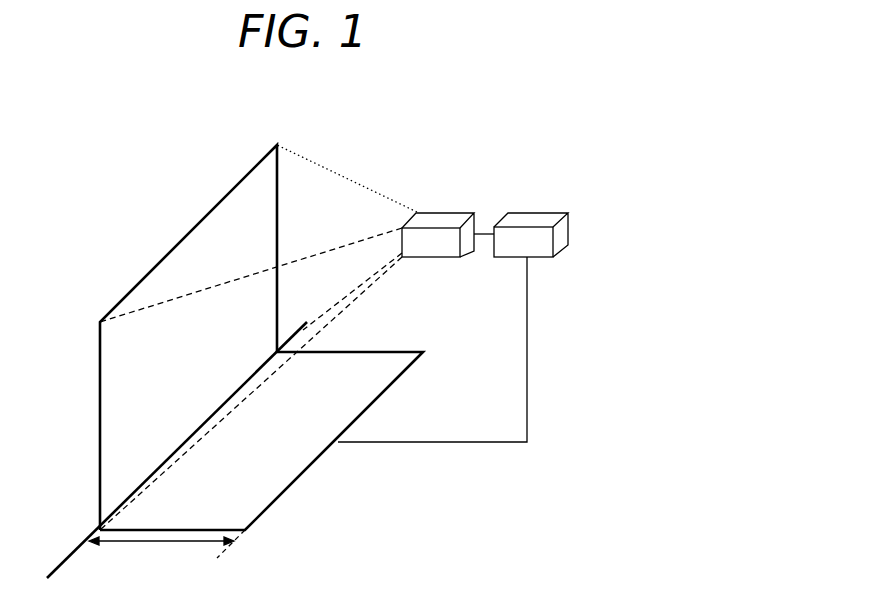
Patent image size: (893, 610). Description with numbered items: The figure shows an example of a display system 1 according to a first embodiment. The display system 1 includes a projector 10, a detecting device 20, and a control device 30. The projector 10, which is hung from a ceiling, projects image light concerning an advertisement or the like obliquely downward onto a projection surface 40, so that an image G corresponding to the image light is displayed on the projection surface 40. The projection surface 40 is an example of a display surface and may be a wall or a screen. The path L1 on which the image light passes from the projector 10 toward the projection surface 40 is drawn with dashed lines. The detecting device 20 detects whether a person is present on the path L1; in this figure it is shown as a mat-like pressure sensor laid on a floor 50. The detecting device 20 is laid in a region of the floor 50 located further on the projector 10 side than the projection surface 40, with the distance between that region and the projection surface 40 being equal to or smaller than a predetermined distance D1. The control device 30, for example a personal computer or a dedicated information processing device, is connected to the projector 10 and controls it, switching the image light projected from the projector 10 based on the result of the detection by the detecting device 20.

The display system 1 is at (505, 129).
The projector 10 is at (457, 215).
The detecting device 20 is at (267, 495).
The control device 30 is at (550, 217).
The projection surface 40 is at (108, 445).
The floor 50 is at (240, 548).
The image G is at (260, 227).
The path L1 is at (335, 277).
The predetermined distance D1 is at (162, 548).